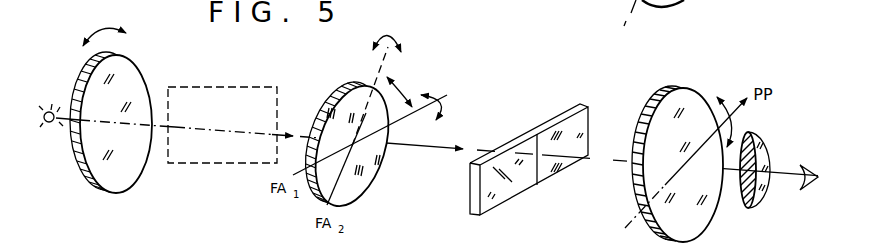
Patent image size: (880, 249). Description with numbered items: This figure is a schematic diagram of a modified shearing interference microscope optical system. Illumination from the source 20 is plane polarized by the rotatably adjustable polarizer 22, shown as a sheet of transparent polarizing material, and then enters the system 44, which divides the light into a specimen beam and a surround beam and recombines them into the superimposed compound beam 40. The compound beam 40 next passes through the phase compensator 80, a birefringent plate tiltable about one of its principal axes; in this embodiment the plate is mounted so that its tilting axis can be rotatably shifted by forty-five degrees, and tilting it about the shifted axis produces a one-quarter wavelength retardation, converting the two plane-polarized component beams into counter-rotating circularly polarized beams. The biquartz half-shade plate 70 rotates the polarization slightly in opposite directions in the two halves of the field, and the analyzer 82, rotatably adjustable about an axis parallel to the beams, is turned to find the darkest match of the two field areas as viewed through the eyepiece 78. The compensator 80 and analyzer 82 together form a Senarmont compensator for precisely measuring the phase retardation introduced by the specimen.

The source 20 is at (48, 124).
The rotatably adjustable polarizer 22 is at (123, 170).
The compound beam 40 is at (281, 131).
The system 44 is at (217, 170).
The biquartz plate 70 is at (535, 126).
The eyepiece 78 is at (755, 132).
The phase compensator 80 is at (394, 189).
The analyzer 82 is at (636, 178).